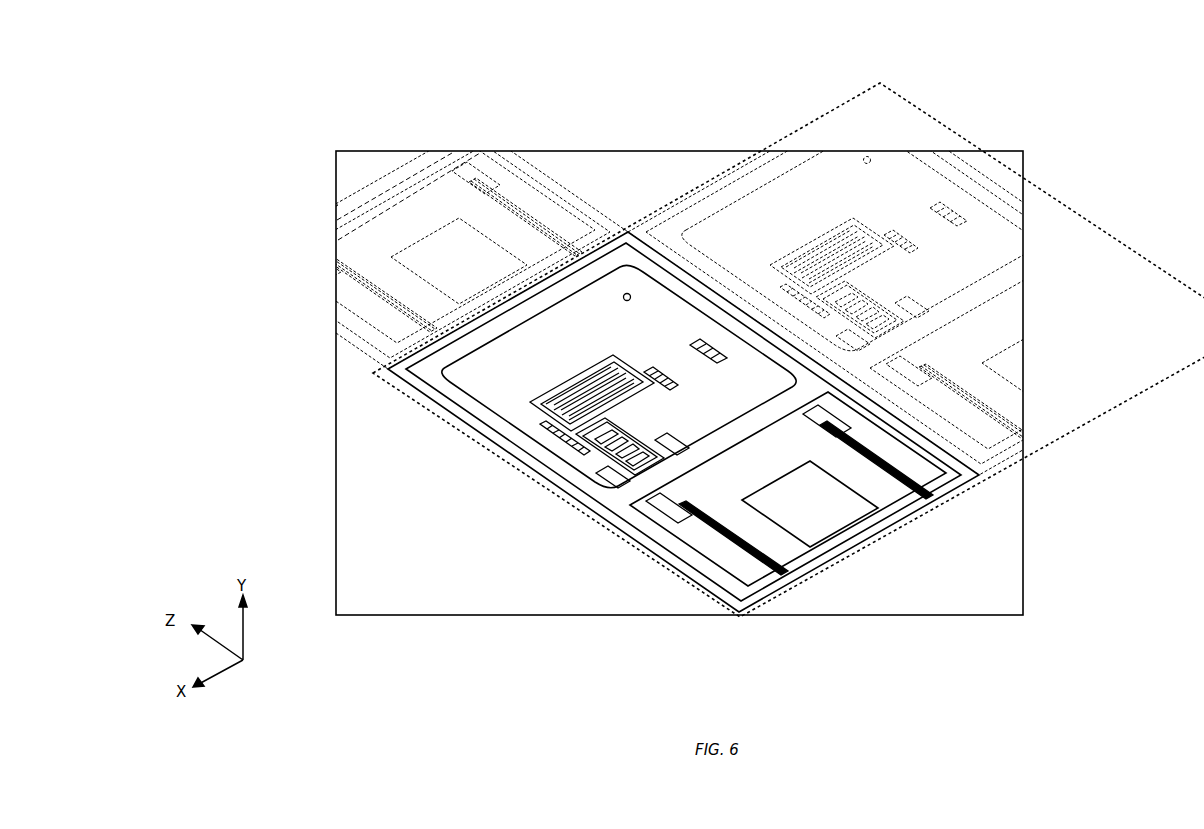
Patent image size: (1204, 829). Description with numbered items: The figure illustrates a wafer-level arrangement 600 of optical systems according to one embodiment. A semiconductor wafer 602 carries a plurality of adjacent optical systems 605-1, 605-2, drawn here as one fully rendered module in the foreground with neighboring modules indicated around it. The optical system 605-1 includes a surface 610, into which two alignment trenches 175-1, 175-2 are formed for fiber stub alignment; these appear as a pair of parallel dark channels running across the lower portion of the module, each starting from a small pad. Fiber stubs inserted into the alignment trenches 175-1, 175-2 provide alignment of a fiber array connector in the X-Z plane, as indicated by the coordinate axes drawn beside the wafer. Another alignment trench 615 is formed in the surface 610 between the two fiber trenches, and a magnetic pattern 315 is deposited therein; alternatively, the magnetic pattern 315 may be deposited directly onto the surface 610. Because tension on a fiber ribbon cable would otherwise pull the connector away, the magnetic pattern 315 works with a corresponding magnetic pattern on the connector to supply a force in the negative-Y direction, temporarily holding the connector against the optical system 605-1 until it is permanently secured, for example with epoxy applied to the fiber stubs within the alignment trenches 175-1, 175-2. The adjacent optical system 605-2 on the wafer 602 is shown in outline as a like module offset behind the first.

The wafer-level arrangement 600 is at (322, 121).
The semiconductor wafer 602 is at (340, 471).
The optical system 605-1 is at (980, 480).
The optical system 605-2 is at (822, 112).
The surface 610 is at (795, 554).
The alignment trench 615 is at (838, 514).
The magnetic pattern 315 is at (870, 552).
The alignment trench 175-1 is at (770, 570).
The alignment trench 175-2 is at (945, 490).